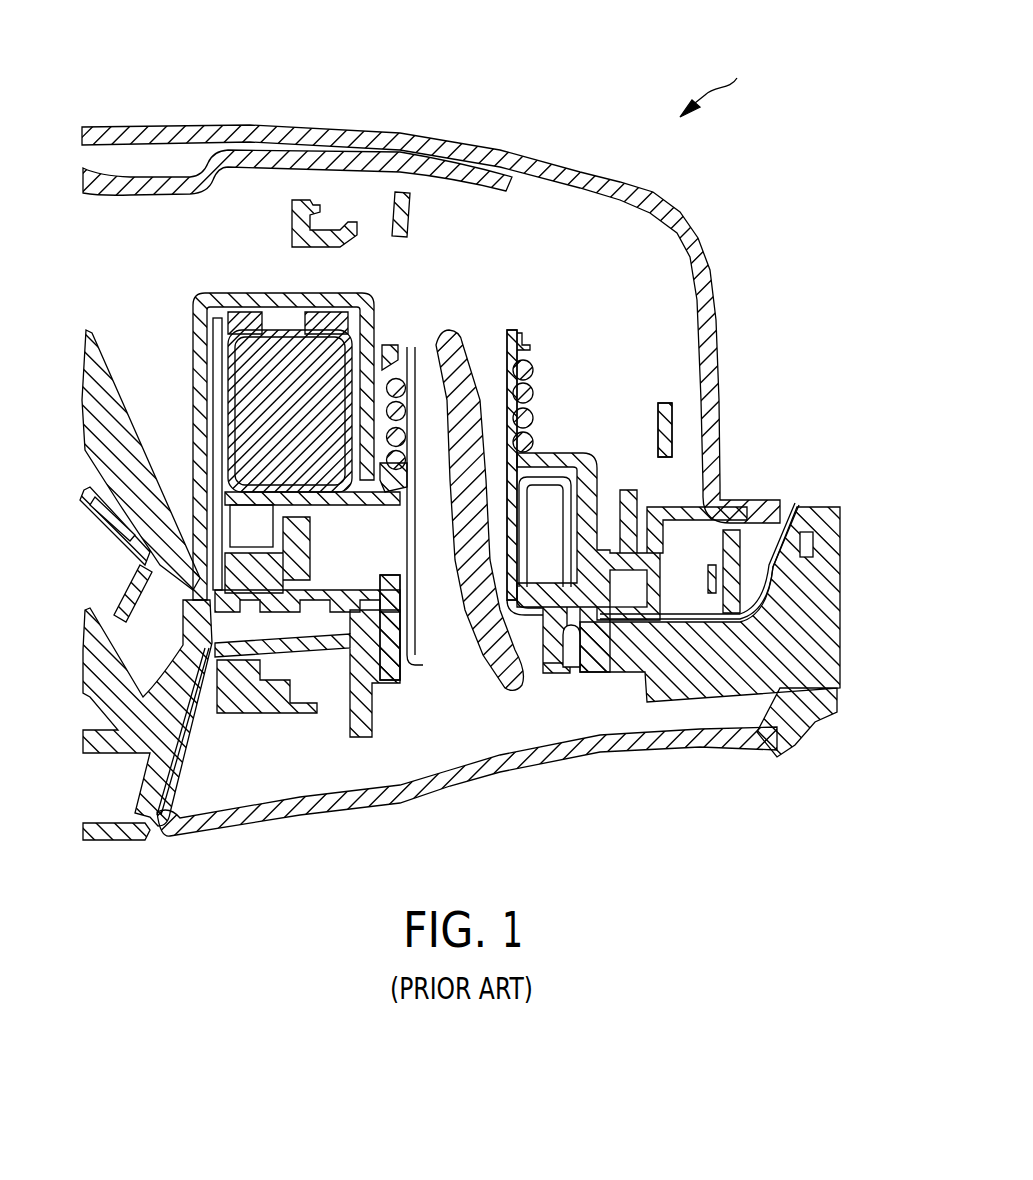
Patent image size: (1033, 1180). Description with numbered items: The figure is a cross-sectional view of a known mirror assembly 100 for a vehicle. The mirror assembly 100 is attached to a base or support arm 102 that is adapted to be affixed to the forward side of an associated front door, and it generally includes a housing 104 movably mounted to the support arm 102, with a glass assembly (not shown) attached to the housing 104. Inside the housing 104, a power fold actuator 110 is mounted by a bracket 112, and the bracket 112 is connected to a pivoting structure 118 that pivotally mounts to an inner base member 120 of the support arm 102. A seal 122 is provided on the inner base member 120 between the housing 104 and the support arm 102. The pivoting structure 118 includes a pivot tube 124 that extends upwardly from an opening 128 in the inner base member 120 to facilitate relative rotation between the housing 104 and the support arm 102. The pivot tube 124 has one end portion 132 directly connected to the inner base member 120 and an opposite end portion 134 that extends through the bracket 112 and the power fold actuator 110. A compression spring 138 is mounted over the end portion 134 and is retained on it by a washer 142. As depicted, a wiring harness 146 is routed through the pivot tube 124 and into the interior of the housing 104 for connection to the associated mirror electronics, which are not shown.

The mirror assembly 100 is at (722, 79).
The support arm 102 is at (672, 792).
The housing 104 is at (302, 92).
The power fold actuator 110 is at (297, 330).
The bracket 112 is at (195, 332).
The pivoting structure 118 is at (545, 280).
The inner base member 120 is at (643, 640).
The seal 122 is at (253, 650).
The pivot tube 124 is at (510, 335).
The opening 128 is at (412, 622).
The end portion 132 is at (522, 660).
The end portion 134 is at (407, 347).
The compression spring 138 is at (535, 418).
The washer 142 is at (533, 362).
The wiring harness 146 is at (452, 338).